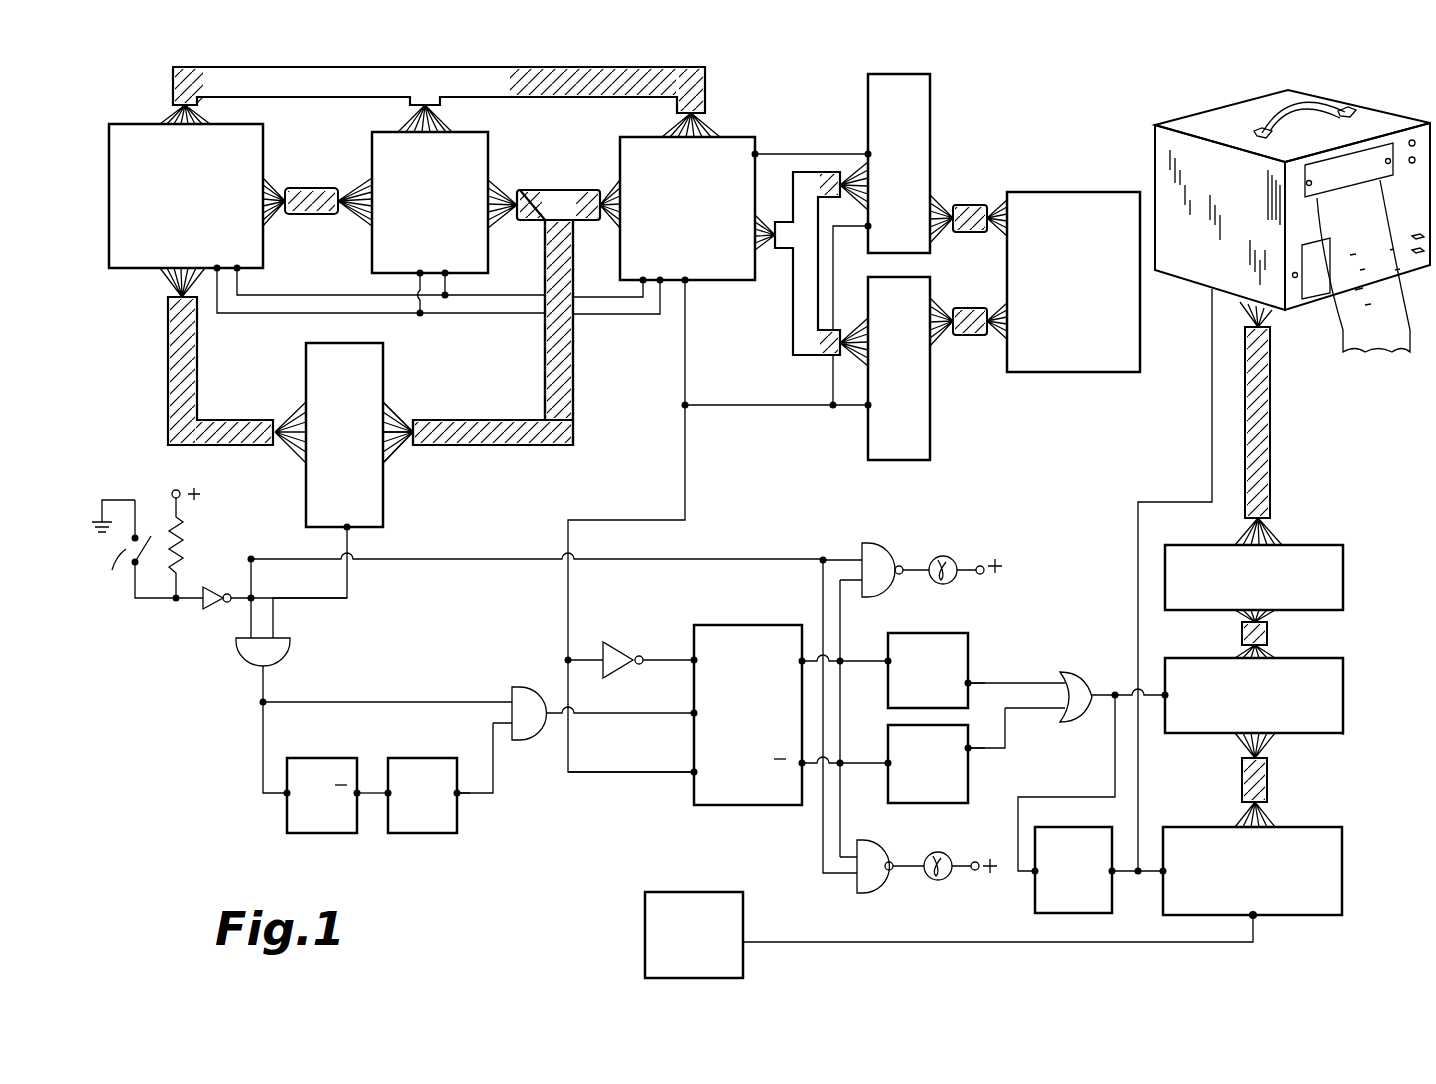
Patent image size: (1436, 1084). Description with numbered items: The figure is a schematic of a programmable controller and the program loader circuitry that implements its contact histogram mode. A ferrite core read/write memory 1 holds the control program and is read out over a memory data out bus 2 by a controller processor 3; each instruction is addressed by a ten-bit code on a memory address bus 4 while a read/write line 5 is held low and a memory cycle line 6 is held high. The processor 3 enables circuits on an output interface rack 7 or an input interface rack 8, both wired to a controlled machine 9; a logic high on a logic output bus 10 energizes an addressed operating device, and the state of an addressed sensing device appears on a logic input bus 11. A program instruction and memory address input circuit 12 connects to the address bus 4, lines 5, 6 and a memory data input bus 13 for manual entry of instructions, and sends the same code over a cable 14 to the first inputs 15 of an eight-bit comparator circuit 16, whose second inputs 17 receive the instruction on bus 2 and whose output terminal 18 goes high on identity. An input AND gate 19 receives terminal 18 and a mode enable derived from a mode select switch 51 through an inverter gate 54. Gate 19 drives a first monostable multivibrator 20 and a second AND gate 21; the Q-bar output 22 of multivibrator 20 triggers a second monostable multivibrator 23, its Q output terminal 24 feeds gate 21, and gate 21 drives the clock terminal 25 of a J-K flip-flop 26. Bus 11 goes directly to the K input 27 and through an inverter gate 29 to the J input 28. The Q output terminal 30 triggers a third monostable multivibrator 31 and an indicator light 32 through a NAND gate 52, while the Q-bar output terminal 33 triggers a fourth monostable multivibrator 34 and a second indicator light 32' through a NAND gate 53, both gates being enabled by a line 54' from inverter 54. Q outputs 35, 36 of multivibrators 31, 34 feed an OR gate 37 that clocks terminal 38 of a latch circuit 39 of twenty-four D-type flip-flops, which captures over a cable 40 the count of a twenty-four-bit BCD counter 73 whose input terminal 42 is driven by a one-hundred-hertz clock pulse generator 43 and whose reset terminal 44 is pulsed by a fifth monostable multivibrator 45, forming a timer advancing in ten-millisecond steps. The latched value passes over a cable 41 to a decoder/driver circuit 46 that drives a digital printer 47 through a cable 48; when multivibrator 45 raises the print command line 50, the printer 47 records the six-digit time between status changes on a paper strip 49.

The read/write memory 1 is at (490, 162).
The memory data out bus 2 is at (573, 363).
The controller processor 3 is at (620, 146).
The memory address bus 4 is at (553, 97).
The read/write line 5 is at (516, 292).
The memory cycle line 6 is at (436, 316).
The output interface rack 7 is at (930, 108).
The input interface rack 8 is at (930, 428).
The controlled machine 9 is at (1082, 192).
The logic output bus 10 is at (808, 153).
The logic input bus 11 is at (757, 405).
The program instruction and memory address input circuit 12 is at (143, 124).
The memory data input bus 13 is at (316, 188).
The cable 14 is at (168, 358).
The first set of comparator inputs 15 is at (318, 460).
The eight-bit comparator circuit 16 is at (306, 353).
The second set of comparator input terminals 17 is at (362, 463).
The comparator output terminal 18 is at (342, 530).
The input AND gate 19 is at (290, 652).
The first monostable multivibrator 20 is at (322, 795).
The second AND gate 21 is at (530, 687).
The Q-bar output 22 is at (365, 788).
The second monostable multivibrator 23 is at (423, 795).
The Q output terminal 24 is at (460, 795).
The clock terminal 25 is at (694, 712).
The J-K flip-flop 26 is at (748, 715).
The K input 27 is at (690, 775).
The J input 28 is at (694, 658).
The inverter gate 29 is at (618, 642).
The Q output terminal 30 is at (802, 658).
The third monostable multivibrator 31 is at (928, 670).
The indicator light 32 is at (952, 544).
The second indicator light 32' is at (946, 846).
The Q-bar output terminal 33 is at (802, 767).
The fourth monostable multivibrator 34 is at (928, 764).
The Q output 35 is at (975, 680).
The Q output 36 is at (972, 752).
The OR gate 37 is at (1082, 672).
The clock terminal 38 is at (1165, 695).
The latch circuit 39 is at (1330, 738).
The cable 40 is at (1268, 780).
The cable 41 is at (1270, 633).
The input terminal 42 is at (1255, 918).
The 100 Hz clock pulse generator 43 is at (745, 896).
The reset terminal 44 is at (1163, 868).
The fifth monostable multivibrator 45 is at (1067, 804).
The 24-bit decoder/driver circuit 46 is at (1320, 545).
The digital printer 47 is at (1372, 115).
The cable 48 is at (1272, 422).
The paper strip 49 is at (1343, 336).
The print command line 50 is at (1212, 393).
The mode select switch 51 is at (146, 543).
The NAND gate 52 is at (880, 545).
The NAND gate 53 is at (882, 888).
The inverter gate 54 is at (214, 576).
The line 54' is at (536, 540).
The 24-bit BCD counter 73 is at (1320, 917).